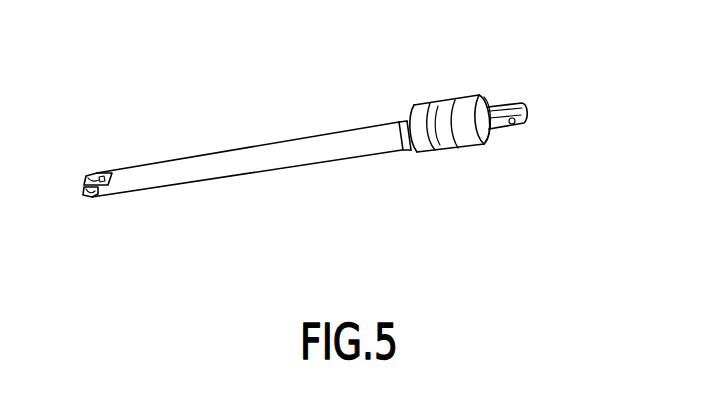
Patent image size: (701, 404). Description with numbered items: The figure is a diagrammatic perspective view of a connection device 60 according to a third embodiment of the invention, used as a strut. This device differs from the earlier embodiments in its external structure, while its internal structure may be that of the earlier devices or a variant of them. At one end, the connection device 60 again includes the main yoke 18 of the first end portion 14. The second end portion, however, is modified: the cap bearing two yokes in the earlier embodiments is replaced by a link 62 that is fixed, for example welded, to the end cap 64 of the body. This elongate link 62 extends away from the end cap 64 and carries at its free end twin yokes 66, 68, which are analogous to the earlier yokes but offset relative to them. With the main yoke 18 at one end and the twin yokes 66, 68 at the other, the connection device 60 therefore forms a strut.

The connection device 60 is at (328, 116).
The link 62 is at (223, 152).
The end cap 64 is at (413, 106).
The yoke 66 is at (91, 176).
The yoke 68 is at (94, 199).
The main yoke 18 is at (507, 100).
The first end portion 14 is at (517, 126).